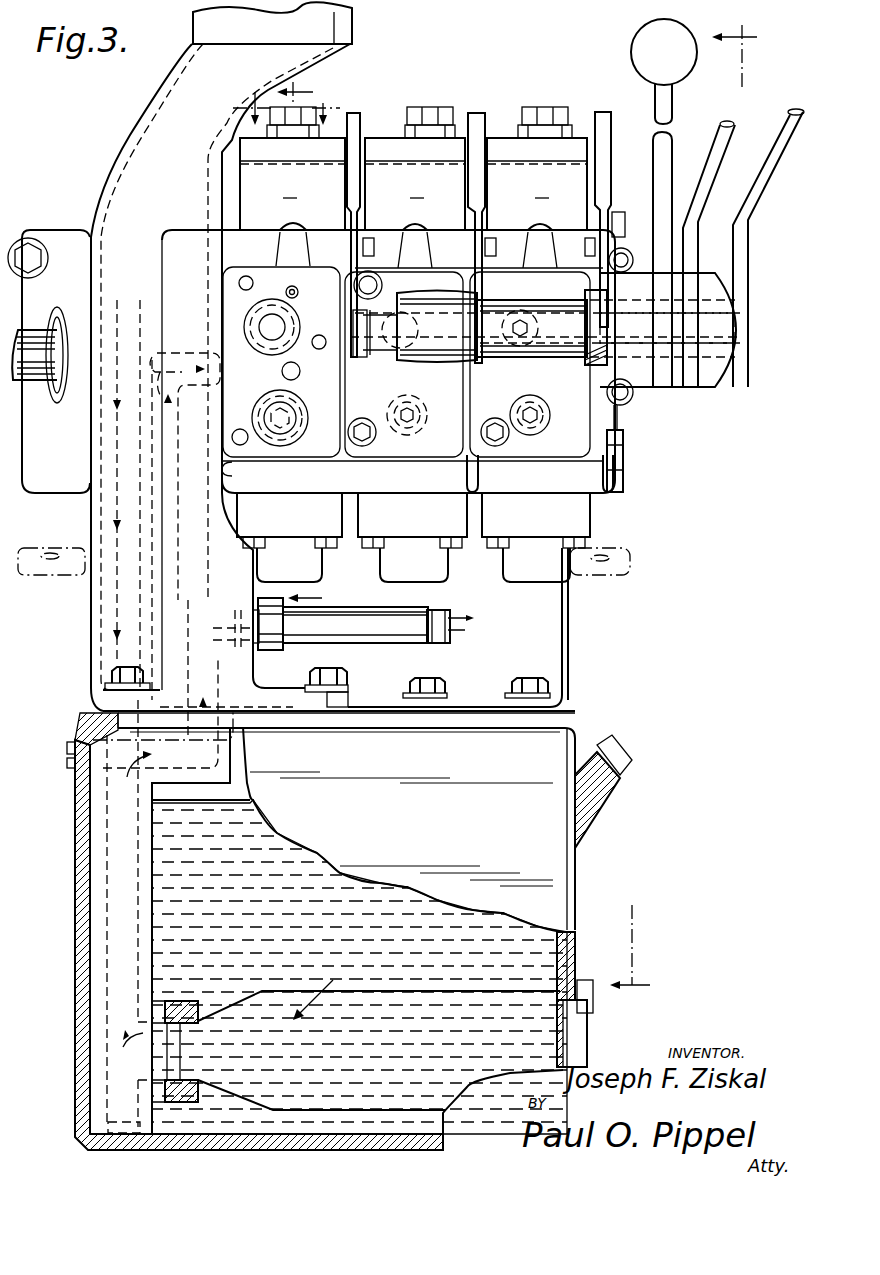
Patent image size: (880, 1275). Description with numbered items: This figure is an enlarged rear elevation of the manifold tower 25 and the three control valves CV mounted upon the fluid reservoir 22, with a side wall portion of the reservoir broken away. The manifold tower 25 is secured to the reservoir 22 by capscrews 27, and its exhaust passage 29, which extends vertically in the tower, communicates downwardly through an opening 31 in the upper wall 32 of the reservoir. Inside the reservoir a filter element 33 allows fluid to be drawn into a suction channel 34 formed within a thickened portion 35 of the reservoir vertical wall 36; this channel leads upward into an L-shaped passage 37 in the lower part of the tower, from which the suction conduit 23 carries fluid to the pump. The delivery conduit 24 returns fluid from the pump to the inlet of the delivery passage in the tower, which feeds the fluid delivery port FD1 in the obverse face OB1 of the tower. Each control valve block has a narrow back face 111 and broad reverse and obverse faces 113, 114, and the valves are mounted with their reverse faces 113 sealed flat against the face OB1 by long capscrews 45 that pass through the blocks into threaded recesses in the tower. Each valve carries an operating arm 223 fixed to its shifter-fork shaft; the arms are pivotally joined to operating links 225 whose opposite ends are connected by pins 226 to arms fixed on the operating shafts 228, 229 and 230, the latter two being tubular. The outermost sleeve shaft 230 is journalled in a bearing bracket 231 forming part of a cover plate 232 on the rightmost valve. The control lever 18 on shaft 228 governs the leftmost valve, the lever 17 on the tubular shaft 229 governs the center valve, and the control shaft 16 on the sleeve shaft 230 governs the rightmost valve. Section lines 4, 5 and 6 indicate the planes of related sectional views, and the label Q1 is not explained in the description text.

The section line 4- 4 is at (683, 506).
The section line 5- 5 is at (289, 108).
The section line 6- 6 is at (311, 345).
The control shaft 16 is at (673, 97).
The lever 17 is at (735, 138).
The control lever 18 is at (764, 171).
The reservoir 22 is at (576, 885).
The suction conduit 23 is at (436, 636).
The delivery conduit 24 is at (388, 643).
The manifold tower 25 is at (90, 510).
The capscrews 27 is at (110, 672).
The exhaust passage 29 is at (108, 593).
The opening 31 is at (95, 722).
The upper wall 32 is at (103, 711).
The filter element 33 is at (530, 993).
The suction channel 34 is at (140, 923).
The thickened portion 35 is at (155, 860).
The vertical wall 36 is at (75, 897).
The L-shaped passage 37 is at (232, 660).
The long capscrews 45 is at (625, 468).
The back face 111 is at (283, 483).
The reverse face 113 is at (231, 472).
The obverse face 114 is at (467, 473).
The operating arm 223 is at (355, 112).
The operating links 225 is at (364, 150).
The pins 226 is at (374, 245).
The operating shaft 228 is at (428, 359).
The operating shaft 229 is at (545, 353).
The sleeve shaft 230 is at (612, 366).
The bearing bracket 231 is at (640, 375).
The cover plate 232 is at (614, 422).
The obverse face OB1 is at (225, 245).
The fluid delivery port FD1 is at (218, 340).
The flow passage Q1 is at (155, 352).